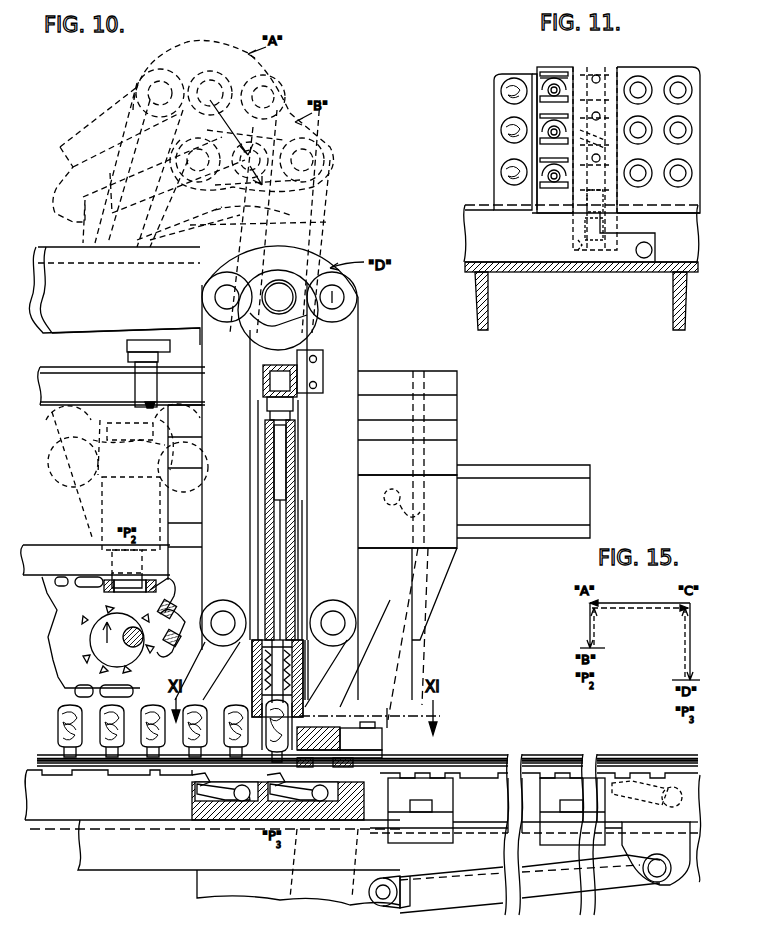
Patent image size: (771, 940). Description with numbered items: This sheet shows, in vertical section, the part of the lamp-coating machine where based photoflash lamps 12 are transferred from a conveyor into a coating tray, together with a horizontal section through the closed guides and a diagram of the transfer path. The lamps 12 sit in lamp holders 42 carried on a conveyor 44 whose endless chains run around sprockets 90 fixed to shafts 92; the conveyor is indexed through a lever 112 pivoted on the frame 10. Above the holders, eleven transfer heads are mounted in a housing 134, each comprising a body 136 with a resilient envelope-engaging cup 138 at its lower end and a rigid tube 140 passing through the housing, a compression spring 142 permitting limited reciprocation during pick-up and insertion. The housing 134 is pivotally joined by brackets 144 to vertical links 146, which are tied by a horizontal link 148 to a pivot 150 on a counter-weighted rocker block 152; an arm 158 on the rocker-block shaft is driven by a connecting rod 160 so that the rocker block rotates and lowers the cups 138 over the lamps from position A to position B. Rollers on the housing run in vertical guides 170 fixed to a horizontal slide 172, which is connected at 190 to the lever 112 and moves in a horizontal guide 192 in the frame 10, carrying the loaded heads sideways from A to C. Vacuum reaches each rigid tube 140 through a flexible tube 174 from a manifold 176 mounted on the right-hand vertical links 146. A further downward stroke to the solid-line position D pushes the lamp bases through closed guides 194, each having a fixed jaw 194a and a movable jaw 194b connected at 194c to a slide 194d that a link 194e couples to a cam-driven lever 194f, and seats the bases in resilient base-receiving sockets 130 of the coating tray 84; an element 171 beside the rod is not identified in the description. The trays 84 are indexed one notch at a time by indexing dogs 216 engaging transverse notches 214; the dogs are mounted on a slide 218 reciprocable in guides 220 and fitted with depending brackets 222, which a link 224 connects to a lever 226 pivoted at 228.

In FIG. 10, the frame 10 is at (67, 830).
In FIG. 11, the frame 10 is at (631, 284).
In FIG. 10, the based photoflash lamps 12 is at (78, 707).
In FIG. 11, the based photoflash lamps 12 is at (503, 168).
In FIG. 10, the lamp holders 42 is at (164, 620).
In FIG. 10, the conveyor 44 is at (77, 670).
In FIG. 10, the coating tray 84 is at (42, 753).
In FIG. 11, the coating tray 84 is at (498, 188).
In FIG. 10, the sprockets 90 is at (97, 611).
In FIG. 10, the shafts 92 is at (128, 645).
In FIG. 10, the lever 112 is at (430, 612).
In FIG. 10, the base-receiving sockets 130 is at (370, 745).
In FIG. 11, the base-receiving sockets 130 is at (677, 67).
In FIG. 10, the housing 134 is at (302, 665).
In FIG. 10, the body 136 is at (302, 680).
In FIG. 10, the resilient envelope-engaging cup 138 is at (318, 705).
In FIG. 10, the rigid tube 140 is at (318, 615).
In FIG. 10, the compression spring 142 is at (305, 655).
In FIG. 10, the brackets 144 is at (228, 600).
In FIG. 10, the vertical links 146 is at (300, 488).
In FIG. 10, the horizontal link 148 is at (321, 270).
In FIG. 10, the pivot 150 is at (345, 320).
In FIG. 10, the counter-weighted rocker block 152 is at (43, 247).
In FIG. 10, the arm 158 is at (107, 338).
In FIG. 10, the connecting rod 160 is at (135, 387).
In FIG. 10, the vertical guides 170 is at (305, 420).
In FIG. 10, the sleeve 171 is at (302, 575).
In FIG. 10, the horizontal slide 172 is at (478, 485).
In FIG. 10, the flexible tube 174 is at (292, 512).
In FIG. 10, the manifold 176 is at (285, 385).
In FIG. 10, the connection point 190 is at (440, 508).
In FIG. 10, the horizontal guide 192 is at (460, 430).
In FIG. 11, the closed guides 194 is at (577, 62).
In FIG. 11, the fixed jaw 194a is at (540, 78).
In FIG. 10, the movable jaw 194b is at (325, 720).
In FIG. 11, the movable jaw 194b is at (555, 72).
In FIG. 11, the connection 194c is at (605, 66).
In FIG. 10, the slide 194d is at (378, 722).
In FIG. 11, the slide 194d is at (605, 130).
In FIG. 11, the link 194e is at (607, 218).
In FIG. 11, the cam-driven lever 194f is at (578, 243).
In FIG. 10, the notches 214 is at (85, 775).
In FIG. 10, the indexing dogs 216 is at (192, 780).
In FIG. 10, the slide 218 is at (192, 822).
In FIG. 10, the guides 220 is at (550, 832).
In FIG. 10, the depending brackets 222 is at (681, 878).
In FIG. 10, the link 224 is at (526, 900).
In FIG. 10, the lever 226 is at (410, 918).
In FIG. 10, the pivot 228 is at (372, 902).